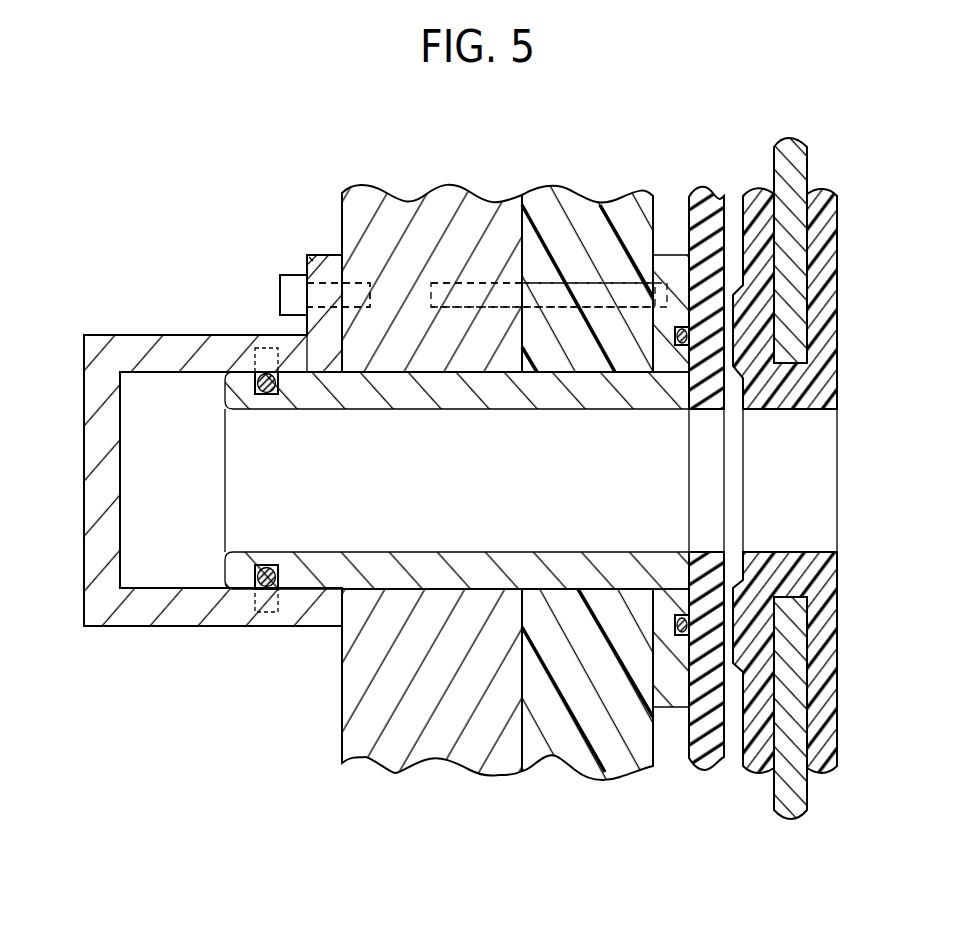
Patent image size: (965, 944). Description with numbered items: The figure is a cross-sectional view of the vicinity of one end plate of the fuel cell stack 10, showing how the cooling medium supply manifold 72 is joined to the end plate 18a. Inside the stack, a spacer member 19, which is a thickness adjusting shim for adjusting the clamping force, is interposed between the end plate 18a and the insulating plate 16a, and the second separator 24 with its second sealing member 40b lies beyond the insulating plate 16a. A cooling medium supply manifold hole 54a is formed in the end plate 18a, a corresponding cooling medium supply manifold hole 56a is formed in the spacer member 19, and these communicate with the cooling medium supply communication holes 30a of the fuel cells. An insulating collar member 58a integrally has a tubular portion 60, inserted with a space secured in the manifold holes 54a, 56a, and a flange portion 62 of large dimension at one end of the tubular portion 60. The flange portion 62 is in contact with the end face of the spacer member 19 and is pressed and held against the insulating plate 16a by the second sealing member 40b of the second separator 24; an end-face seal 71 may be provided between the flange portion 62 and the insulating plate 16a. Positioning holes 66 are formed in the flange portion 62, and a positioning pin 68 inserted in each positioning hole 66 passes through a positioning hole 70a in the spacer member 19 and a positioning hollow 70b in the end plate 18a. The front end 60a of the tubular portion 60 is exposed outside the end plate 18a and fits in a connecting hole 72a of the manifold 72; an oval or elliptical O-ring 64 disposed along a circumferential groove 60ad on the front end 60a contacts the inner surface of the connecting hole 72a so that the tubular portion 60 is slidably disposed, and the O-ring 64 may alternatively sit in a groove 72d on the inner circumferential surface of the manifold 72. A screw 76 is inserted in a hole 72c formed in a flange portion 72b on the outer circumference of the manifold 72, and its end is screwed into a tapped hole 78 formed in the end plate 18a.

The fuel cell stack 10 is at (441, 110).
The insulating plate 16a is at (708, 760).
The end plate 18a is at (445, 760).
The spacer member 19 is at (587, 772).
The second separator 24 is at (797, 352).
The cooling medium supply communication hole 30a is at (822, 498).
The second sealing member 40b is at (735, 310).
The cooling medium supply manifold hole 54a is at (392, 378).
The cooling medium supply manifold hole 56a is at (543, 374).
The insulating collar member 58a is at (690, 272).
The tubular portion 60 is at (393, 590).
The front end 60a is at (331, 572).
The circumferential groove 60ad is at (256, 576).
The flange portion 62 is at (670, 685).
The O-ring 64 is at (262, 360).
The positioning hole 66 is at (665, 305).
The positioning pin 68 is at (493, 275).
The positioning hole 70a is at (592, 305).
The positioning hollow 70b is at (441, 300).
The end-face seal 71 is at (679, 347).
The cooling medium supply manifold 72 is at (148, 335).
The connecting hole 72a is at (301, 374).
The flange portion 72b is at (310, 258).
The hole 72c is at (327, 298).
The groove 72d is at (257, 602).
The screw 76 is at (287, 296).
The tapped hole 78 is at (357, 300).